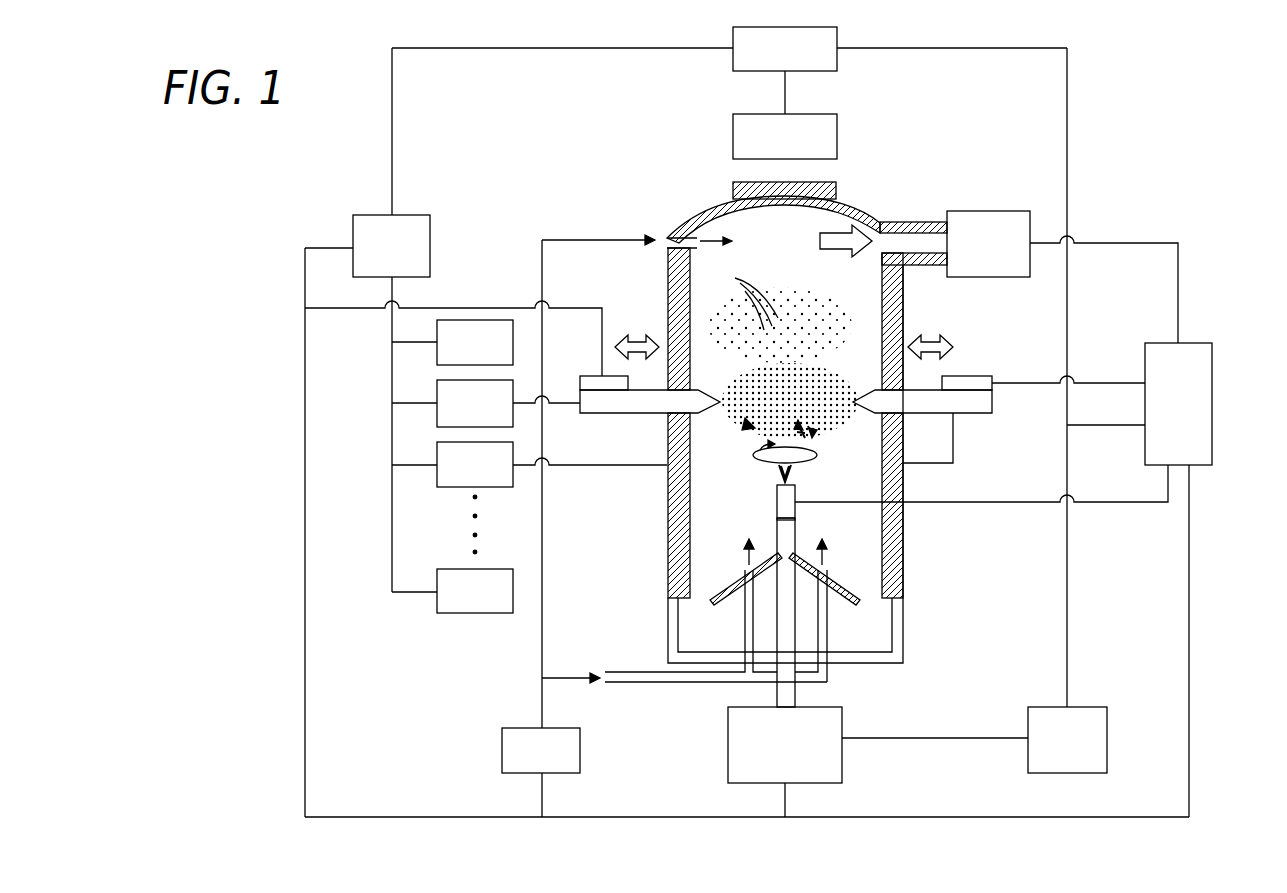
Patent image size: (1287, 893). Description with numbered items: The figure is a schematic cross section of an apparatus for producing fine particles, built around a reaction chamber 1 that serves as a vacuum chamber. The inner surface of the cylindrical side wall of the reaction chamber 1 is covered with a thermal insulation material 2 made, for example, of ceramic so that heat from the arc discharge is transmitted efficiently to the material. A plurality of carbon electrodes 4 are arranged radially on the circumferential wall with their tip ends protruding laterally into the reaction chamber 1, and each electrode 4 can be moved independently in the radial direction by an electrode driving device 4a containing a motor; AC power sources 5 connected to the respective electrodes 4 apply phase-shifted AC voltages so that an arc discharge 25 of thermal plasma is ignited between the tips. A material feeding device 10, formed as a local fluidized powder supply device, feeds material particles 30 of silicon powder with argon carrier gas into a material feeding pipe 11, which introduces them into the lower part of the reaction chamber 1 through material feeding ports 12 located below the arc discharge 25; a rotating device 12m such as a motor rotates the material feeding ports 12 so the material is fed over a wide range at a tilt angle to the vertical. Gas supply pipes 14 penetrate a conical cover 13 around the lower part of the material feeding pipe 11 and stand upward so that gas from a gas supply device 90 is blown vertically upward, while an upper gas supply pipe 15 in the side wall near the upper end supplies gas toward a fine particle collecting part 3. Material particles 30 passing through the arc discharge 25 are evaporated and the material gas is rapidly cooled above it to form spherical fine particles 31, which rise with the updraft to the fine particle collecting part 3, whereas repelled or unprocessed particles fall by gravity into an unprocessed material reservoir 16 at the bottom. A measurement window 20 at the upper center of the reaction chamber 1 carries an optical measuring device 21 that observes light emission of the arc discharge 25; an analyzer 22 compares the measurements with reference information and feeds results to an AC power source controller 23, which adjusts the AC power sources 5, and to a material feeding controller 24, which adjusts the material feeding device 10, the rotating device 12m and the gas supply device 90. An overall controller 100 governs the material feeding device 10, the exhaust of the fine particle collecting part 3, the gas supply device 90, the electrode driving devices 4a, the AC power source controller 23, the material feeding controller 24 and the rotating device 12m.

The reaction chamber 1 is at (857, 208).
The thermal insulation material 2 is at (881, 298).
The fine particle collecting part 3 is at (986, 211).
The electrodes 4 is at (606, 414).
The electrode driving devices 4a is at (588, 376).
The AC power sources 5 is at (502, 320).
The material feeding device 10 is at (838, 760).
The material feeding pipe 11 is at (777, 697).
The material feeding ports 12 is at (793, 478).
The rotating device 12m is at (793, 508).
The conical cover 13 is at (860, 590).
The gas supply pipes 14 is at (818, 634).
The gas supply pipe 15 is at (662, 237).
The unprocessed material reservoir 16 is at (870, 623).
The measurement window 20 is at (733, 190).
The optical measuring device 21 is at (733, 138).
The analyzer 22 is at (733, 40).
The AC power source controller 23 is at (422, 215).
The material feeding controller 24 is at (1100, 762).
The arc discharge 25 is at (745, 428).
The material particles 30 is at (812, 428).
The fine particles 31 is at (741, 284).
The gas supply device 90 is at (502, 745).
The controller 100 is at (1197, 343).